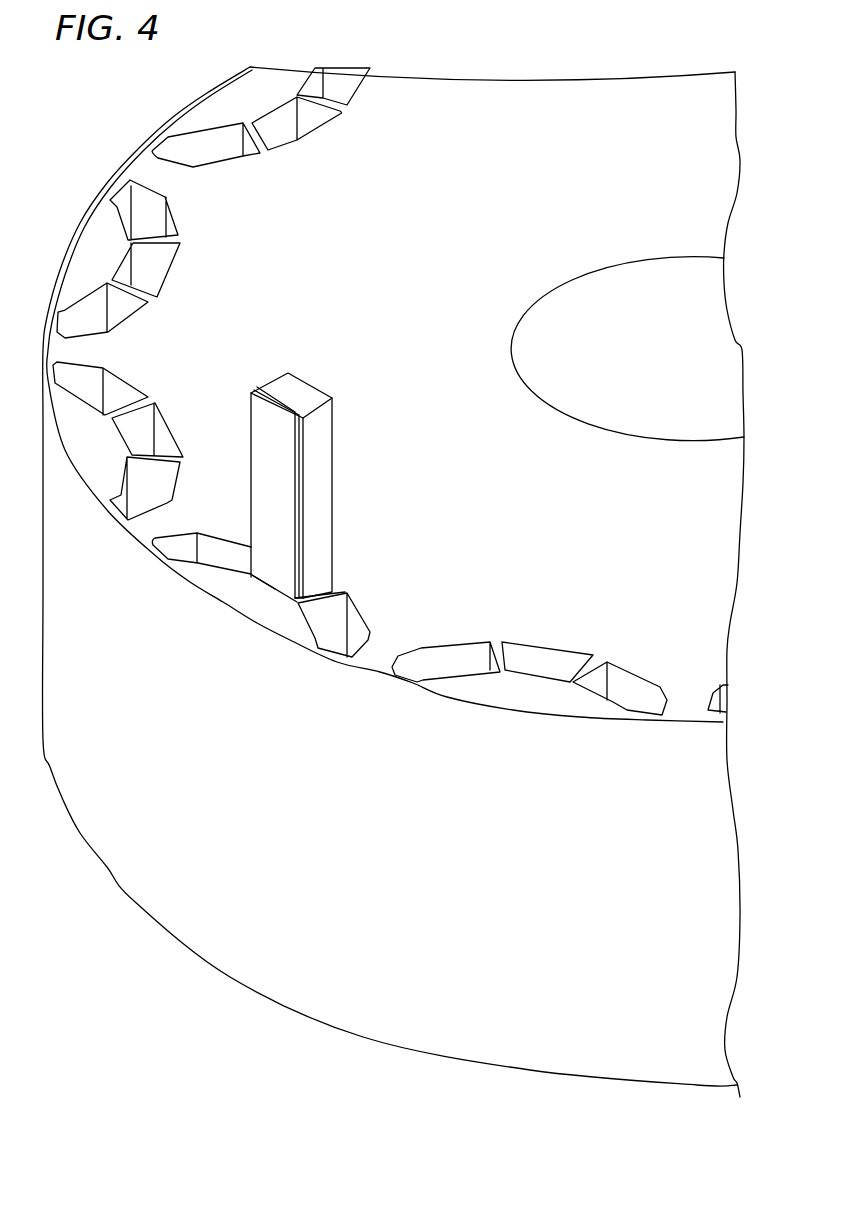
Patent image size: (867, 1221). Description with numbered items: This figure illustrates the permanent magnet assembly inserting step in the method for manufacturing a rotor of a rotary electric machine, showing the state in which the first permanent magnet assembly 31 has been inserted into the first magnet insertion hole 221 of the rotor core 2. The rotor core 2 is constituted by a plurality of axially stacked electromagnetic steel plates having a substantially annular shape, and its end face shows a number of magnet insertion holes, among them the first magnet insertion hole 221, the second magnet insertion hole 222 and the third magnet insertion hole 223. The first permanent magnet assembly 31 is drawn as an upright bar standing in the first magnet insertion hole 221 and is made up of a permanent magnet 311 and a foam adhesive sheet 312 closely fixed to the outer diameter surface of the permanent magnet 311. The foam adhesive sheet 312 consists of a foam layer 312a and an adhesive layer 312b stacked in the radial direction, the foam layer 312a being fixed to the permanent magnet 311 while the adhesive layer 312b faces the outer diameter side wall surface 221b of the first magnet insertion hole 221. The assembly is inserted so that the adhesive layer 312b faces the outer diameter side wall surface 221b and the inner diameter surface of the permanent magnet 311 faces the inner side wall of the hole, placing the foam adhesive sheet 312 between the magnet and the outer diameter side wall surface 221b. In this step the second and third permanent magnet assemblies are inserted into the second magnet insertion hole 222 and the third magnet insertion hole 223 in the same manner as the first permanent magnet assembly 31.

The rotor core 2 is at (720, 560).
The first permanent magnet assembly 31 is at (291, 441).
The permanent magnet 311 is at (307, 395).
The foam adhesive sheet 312 is at (260, 430).
The foam layer 312a is at (273, 396).
The adhesive layer 312b is at (262, 392).
The first magnet insertion hole 221 is at (326, 593).
The outer diameter side wall surface 221b is at (268, 586).
The second magnet insertion hole 222 is at (328, 647).
The third magnet insertion hole 223 is at (175, 550).